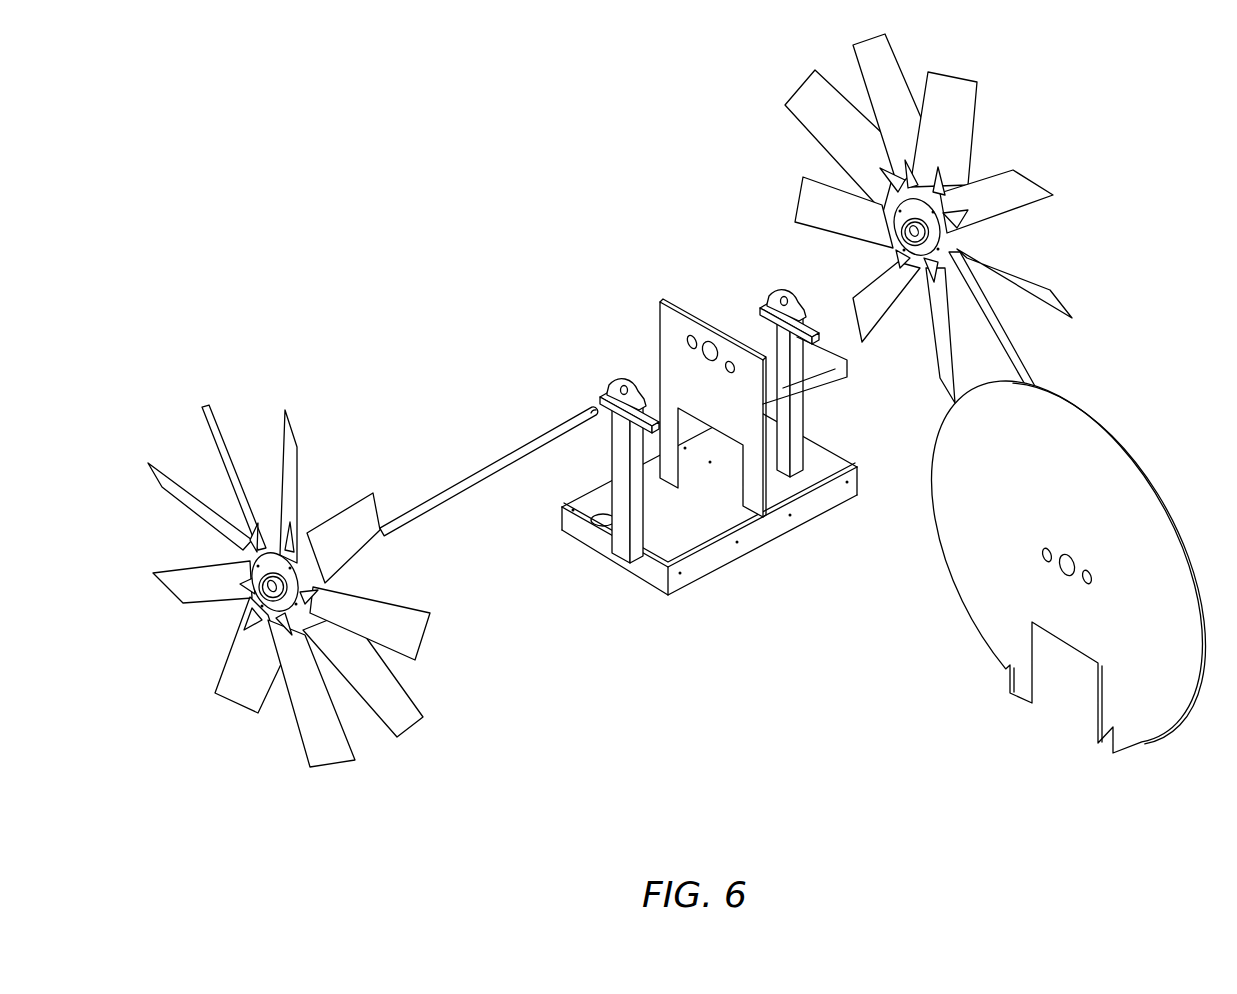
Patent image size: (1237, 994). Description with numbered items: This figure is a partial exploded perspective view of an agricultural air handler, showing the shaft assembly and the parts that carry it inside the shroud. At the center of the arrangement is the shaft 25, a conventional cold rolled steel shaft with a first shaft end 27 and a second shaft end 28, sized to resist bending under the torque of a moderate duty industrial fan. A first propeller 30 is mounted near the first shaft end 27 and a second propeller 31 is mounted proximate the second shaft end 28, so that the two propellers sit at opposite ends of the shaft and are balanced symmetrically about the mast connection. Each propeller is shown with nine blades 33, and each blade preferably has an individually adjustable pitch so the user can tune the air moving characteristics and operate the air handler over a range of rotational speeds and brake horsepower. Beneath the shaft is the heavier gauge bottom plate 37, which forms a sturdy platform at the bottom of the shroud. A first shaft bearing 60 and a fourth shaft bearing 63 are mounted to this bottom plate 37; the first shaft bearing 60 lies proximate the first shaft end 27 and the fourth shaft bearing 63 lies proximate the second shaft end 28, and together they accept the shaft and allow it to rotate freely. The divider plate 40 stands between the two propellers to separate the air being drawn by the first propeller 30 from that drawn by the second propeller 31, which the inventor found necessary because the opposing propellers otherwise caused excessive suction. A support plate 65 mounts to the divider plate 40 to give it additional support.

The shaft 25 is at (477, 477).
The first shaft end 27 is at (295, 571).
The second shaft end 28 is at (588, 409).
The first propeller 30 is at (273, 566).
The second propeller 31 is at (910, 272).
The blades 33 is at (292, 438).
The bottom plate 37 is at (697, 535).
The divider plate 40 is at (1043, 497).
The first shaft bearing 60 is at (612, 382).
The fourth shaft bearing 63 is at (770, 292).
The support plate 65 is at (668, 325).